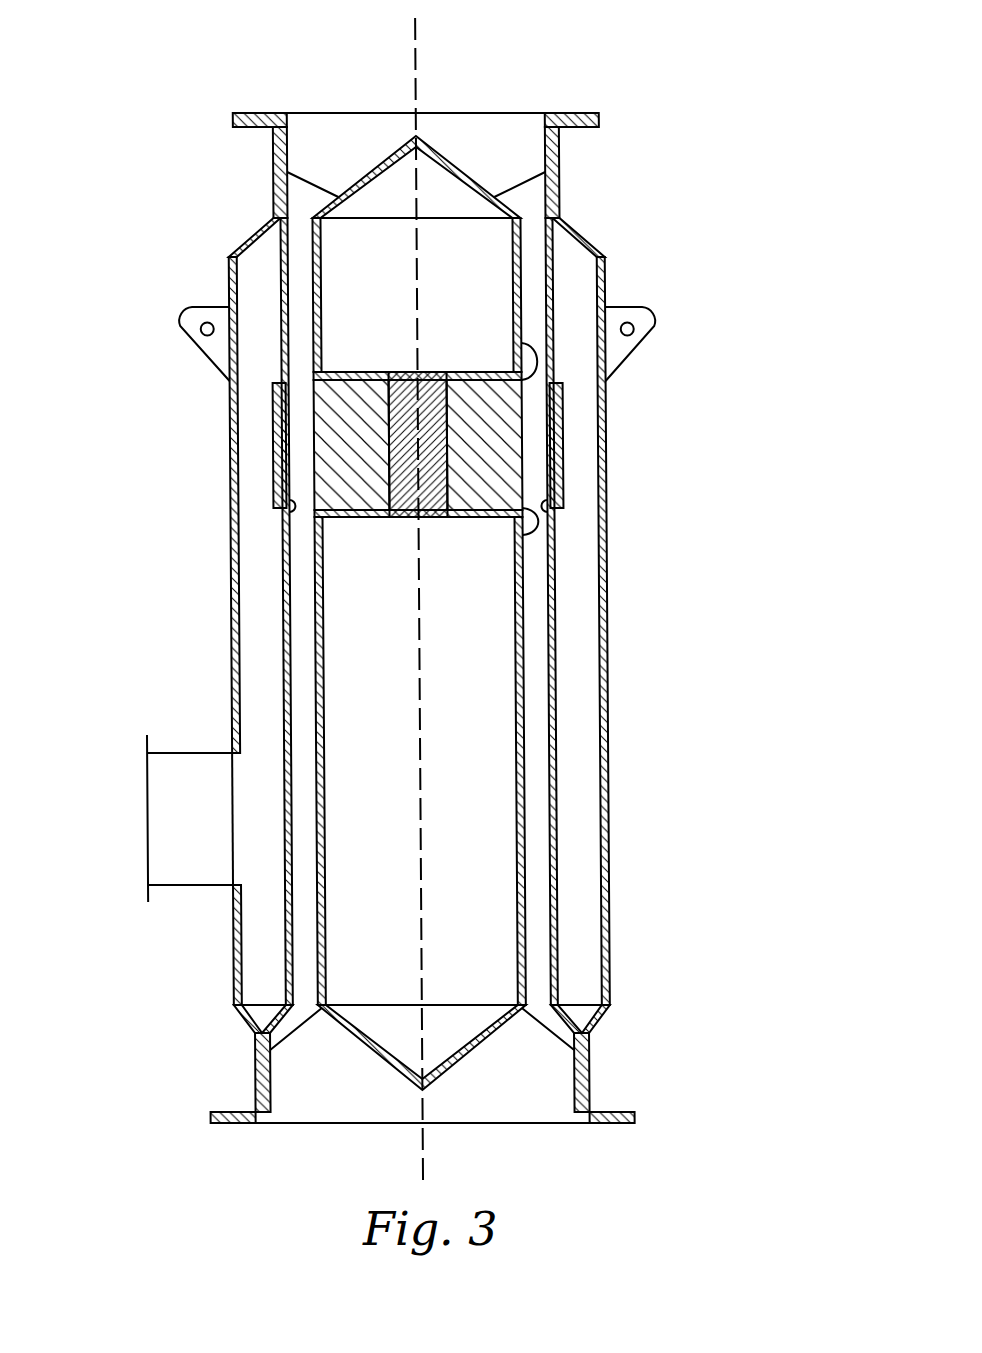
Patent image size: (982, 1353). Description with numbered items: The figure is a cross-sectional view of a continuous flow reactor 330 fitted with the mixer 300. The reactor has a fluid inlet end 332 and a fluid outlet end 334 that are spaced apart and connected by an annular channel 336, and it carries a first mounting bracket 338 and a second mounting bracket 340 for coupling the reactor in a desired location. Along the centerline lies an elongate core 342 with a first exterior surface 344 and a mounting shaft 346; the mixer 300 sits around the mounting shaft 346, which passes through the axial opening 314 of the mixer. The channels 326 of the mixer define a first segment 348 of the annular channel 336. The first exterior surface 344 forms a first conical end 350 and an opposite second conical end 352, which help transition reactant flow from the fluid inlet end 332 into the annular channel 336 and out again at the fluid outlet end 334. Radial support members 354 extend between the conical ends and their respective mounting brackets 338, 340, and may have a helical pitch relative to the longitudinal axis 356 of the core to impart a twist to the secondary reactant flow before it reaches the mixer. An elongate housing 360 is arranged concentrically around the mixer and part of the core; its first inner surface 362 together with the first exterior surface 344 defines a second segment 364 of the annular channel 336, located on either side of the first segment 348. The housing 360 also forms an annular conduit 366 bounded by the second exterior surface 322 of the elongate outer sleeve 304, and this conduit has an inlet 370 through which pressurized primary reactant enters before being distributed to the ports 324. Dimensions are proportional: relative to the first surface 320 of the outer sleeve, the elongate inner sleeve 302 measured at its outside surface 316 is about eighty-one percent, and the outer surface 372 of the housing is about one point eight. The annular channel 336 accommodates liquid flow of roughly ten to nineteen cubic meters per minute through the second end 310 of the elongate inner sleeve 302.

The mixer 300 is at (507, 380).
The elongate inner sleeve 302 is at (326, 398).
The elongate outer sleeve 304 is at (556, 415).
The second end of the elongate inner sleeve 310 is at (520, 343).
The axial opening 314 is at (452, 438).
The outside surface 316 is at (300, 397).
The first surface 320 is at (297, 508).
The second exterior surface 322 is at (298, 482).
The ports 324 is at (278, 456).
The channels 326 is at (300, 417).
The continuous flow reactor 330 is at (194, 69).
The fluid inlet end 332 is at (497, 102).
The fluid outlet end 334 is at (501, 1144).
The annular channel 336 is at (295, 950).
The first mounting bracket 338 is at (252, 130).
The second mounting bracket 340 is at (236, 1108).
The elongate core 342 is at (334, 305).
The first exterior surface 344 is at (312, 240).
The mounting shaft 346 is at (408, 372).
The first segment 348 is at (283, 512).
The first conical end 350 is at (373, 149).
The second conical end 352 is at (457, 1079).
The radial support members 354 is at (353, 165).
The longitudinal axis 356 is at (432, 65).
The elongate housing 360 is at (230, 637).
The first inner surface 362 is at (304, 605).
The second segment 364 is at (300, 262).
The annular conduit 366 is at (248, 550).
The inlet 370 is at (183, 825).
The outer surface 372 is at (232, 600).